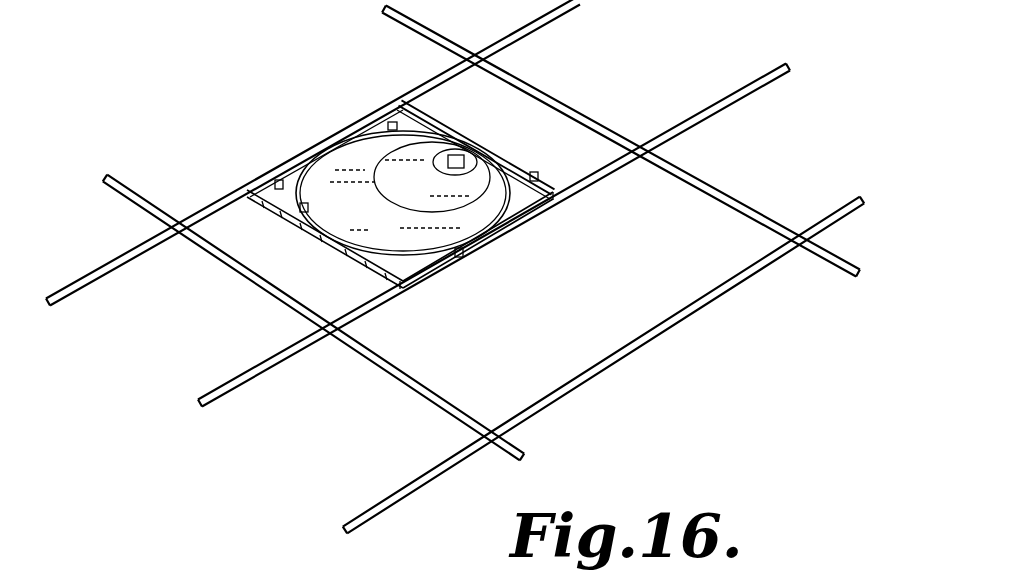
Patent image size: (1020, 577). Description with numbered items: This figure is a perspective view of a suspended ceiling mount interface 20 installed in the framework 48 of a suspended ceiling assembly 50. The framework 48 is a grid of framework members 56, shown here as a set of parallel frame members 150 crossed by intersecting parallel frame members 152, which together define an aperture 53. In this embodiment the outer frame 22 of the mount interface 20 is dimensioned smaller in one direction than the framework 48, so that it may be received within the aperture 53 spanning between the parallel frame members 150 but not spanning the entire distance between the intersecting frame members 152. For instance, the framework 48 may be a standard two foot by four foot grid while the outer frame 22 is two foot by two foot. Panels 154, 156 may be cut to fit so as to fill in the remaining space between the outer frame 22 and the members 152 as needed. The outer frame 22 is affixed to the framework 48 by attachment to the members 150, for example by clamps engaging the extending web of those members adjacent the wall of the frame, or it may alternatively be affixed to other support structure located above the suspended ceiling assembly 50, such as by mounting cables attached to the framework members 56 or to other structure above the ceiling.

The suspended ceiling mount interface 20 is at (497, 150).
The outer frame 22 is at (393, 121).
The framework 48 is at (668, 331).
The suspended ceiling assembly 50 is at (778, 162).
The aperture 53 is at (436, 98).
The framework members 56 is at (535, 92).
The parallel frame members 150 is at (213, 204).
The intersecting parallel frame members 152 is at (610, 130).
The panel 154 is at (289, 264).
The panel 156 is at (524, 127).